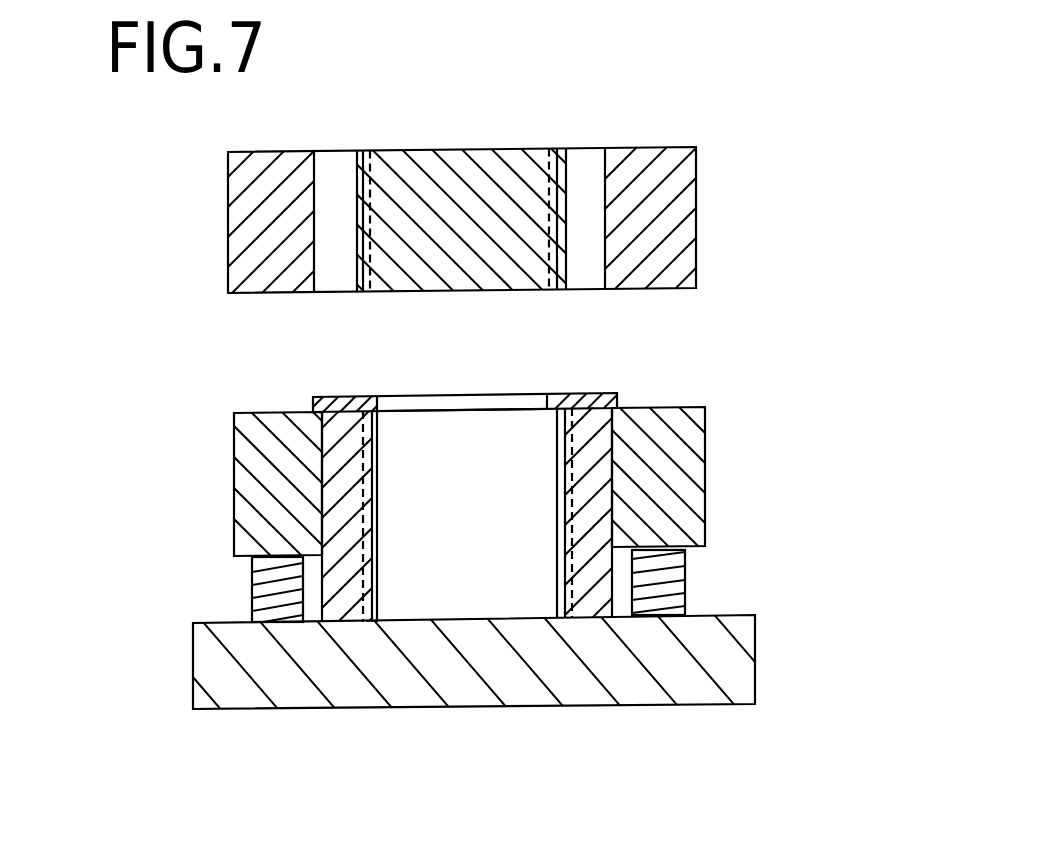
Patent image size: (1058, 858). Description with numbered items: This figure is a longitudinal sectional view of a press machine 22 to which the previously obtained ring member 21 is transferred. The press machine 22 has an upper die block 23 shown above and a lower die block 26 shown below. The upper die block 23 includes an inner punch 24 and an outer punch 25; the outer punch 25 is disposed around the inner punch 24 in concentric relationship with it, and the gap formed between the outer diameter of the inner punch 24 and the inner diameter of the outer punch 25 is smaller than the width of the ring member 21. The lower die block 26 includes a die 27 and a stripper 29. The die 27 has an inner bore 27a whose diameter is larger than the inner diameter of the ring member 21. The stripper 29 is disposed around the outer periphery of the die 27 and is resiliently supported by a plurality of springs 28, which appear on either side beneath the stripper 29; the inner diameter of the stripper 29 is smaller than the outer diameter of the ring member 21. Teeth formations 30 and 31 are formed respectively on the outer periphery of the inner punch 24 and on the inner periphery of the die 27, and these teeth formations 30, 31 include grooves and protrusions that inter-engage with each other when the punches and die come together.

The ring member 21 is at (313, 405).
The press machine 22 is at (195, 327).
The upper die block 23 is at (722, 194).
The inner punch 24 is at (452, 158).
The outer punch 25 is at (238, 183).
The lower die block 26 is at (740, 498).
The die 27 is at (603, 440).
The inner bore 27a is at (462, 437).
The springs 28 is at (252, 582).
The stripper 29 is at (243, 442).
The teeth formation 30 is at (355, 247).
The teeth formation 31 is at (380, 445).